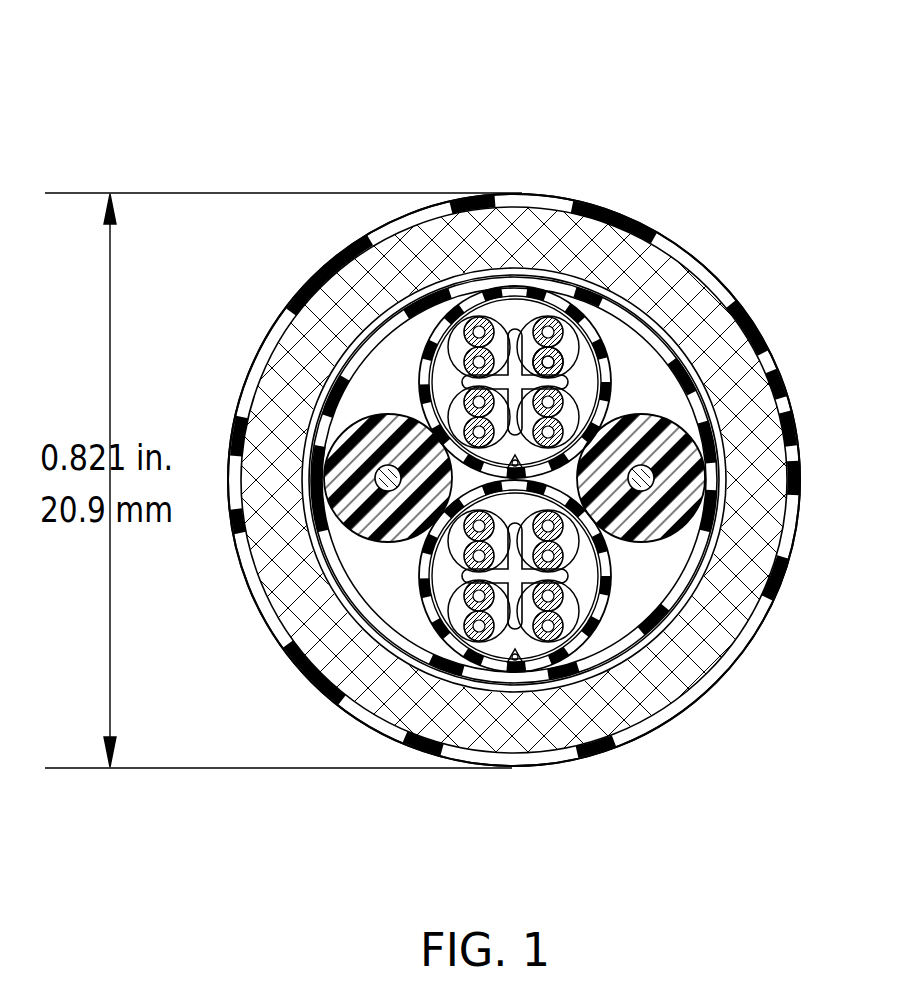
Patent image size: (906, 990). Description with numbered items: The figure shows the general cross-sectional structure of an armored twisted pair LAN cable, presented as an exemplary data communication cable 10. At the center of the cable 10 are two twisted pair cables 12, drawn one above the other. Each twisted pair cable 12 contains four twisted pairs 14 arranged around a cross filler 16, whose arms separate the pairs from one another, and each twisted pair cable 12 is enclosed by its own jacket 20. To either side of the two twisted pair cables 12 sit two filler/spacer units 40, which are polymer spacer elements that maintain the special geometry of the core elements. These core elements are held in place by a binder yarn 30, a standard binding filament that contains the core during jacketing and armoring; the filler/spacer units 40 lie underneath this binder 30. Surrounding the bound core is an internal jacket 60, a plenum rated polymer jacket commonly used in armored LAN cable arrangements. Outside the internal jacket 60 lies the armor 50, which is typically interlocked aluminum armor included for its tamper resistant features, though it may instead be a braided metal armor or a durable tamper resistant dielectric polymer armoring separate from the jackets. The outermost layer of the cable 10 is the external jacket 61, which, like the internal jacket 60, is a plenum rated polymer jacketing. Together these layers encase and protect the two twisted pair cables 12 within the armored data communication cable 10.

The data communication cable 10 is at (690, 106).
The twisted pair cable 12 is at (575, 336).
The twisted pairs 14 is at (583, 377).
The cross filler 16 is at (518, 333).
The jacket 20 is at (610, 388).
The binder yarn 30 is at (668, 583).
The filler/spacer units 40 is at (677, 450).
The interlock armor 50 is at (690, 657).
The internal jacket 60 is at (623, 660).
The external jacket 61 is at (555, 765).